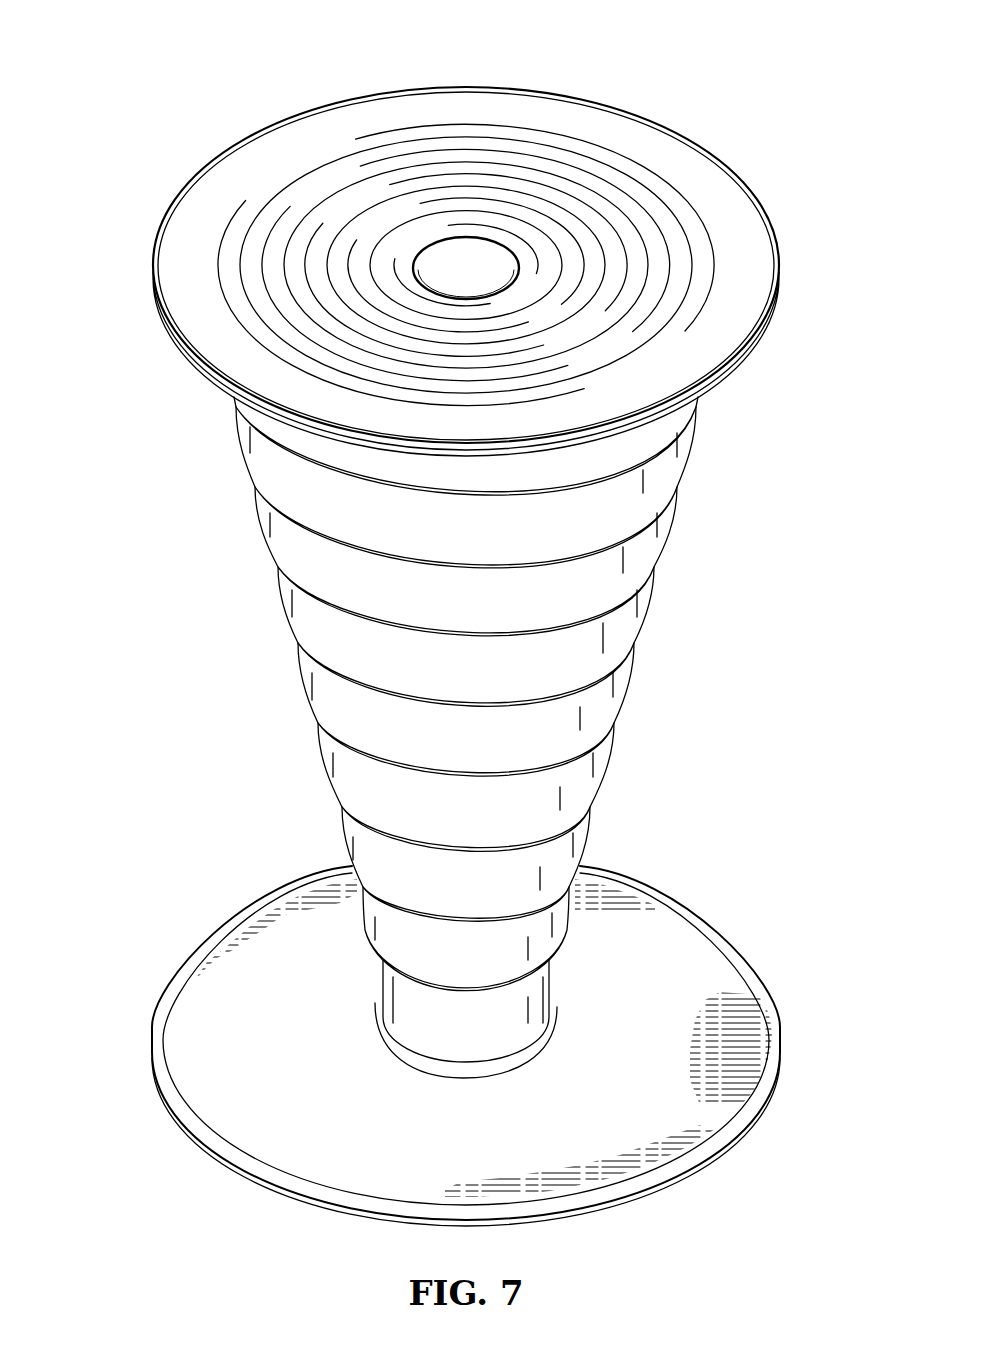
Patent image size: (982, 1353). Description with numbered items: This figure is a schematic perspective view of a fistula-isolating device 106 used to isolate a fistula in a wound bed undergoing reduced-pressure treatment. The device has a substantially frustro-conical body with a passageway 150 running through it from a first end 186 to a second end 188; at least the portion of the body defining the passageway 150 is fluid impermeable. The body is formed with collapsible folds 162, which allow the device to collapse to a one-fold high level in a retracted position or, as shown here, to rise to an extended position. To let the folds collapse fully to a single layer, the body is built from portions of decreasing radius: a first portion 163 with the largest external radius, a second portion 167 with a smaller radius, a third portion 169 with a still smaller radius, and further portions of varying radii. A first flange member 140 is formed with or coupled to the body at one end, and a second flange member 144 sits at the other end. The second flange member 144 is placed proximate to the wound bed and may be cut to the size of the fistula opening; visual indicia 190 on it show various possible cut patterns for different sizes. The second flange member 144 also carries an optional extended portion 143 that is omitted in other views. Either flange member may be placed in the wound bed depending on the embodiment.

The fistula-isolating device 106 is at (124, 442).
The first flange member 140 is at (697, 933).
The extended portion 143 is at (427, 183).
The second flange member 144 is at (722, 183).
The passageway 150 is at (481, 262).
The collapsible folds 162 is at (278, 585).
The first portion 163 is at (363, 917).
The second portion 167 is at (340, 822).
The third portion 169 is at (318, 745).
The first end 186 is at (552, 1012).
The second end 188 is at (697, 398).
The visual indicia 190 is at (618, 153).